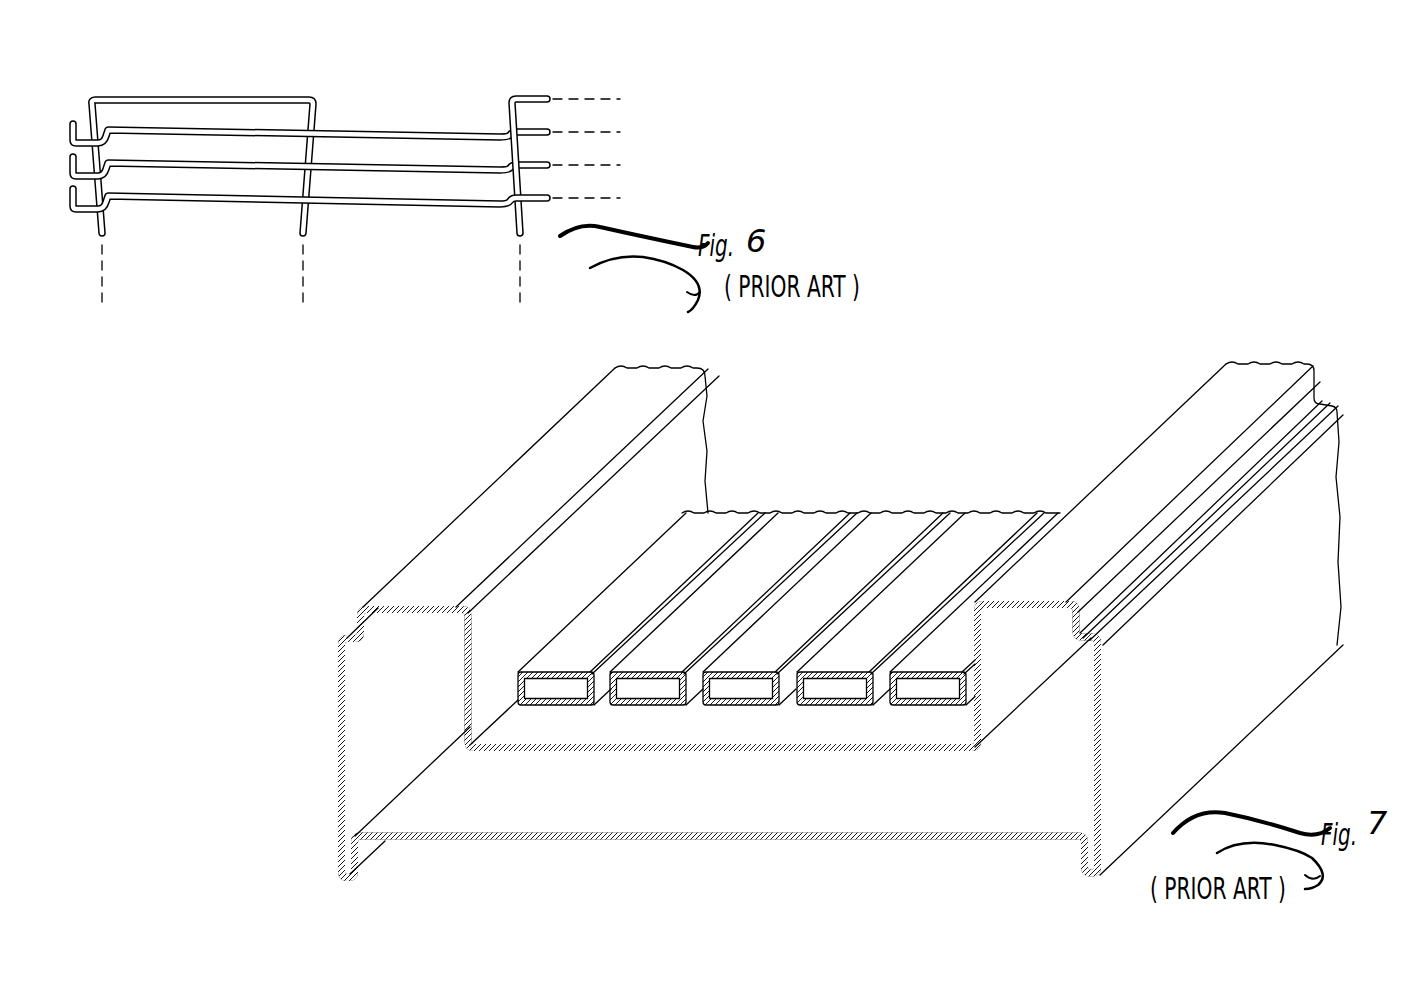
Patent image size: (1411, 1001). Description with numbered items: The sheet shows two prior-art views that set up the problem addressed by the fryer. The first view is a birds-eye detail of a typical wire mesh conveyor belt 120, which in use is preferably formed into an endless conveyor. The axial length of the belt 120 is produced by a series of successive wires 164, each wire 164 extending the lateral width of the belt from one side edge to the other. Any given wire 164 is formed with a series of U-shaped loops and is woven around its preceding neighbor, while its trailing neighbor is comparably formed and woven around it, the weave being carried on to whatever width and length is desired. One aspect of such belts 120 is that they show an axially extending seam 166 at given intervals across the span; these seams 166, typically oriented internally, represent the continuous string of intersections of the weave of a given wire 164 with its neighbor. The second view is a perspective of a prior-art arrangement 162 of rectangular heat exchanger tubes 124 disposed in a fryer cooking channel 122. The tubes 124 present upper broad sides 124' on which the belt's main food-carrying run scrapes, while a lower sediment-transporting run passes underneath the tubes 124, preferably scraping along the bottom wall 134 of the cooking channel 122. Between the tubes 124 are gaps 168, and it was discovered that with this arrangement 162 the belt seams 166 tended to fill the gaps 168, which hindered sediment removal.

In FIG. 6, the wire mesh conveyor belt 120 is at (195, 79).
In FIG. 6, the wire 164 is at (418, 207).
In FIG. 6, the seam 166 is at (318, 112).
In FIG. 7, the arrangement 162 is at (953, 408).
In FIG. 7, the fryer cooking channel 122 is at (703, 458).
In FIG. 7, the rectangular heat exchanger tube 124 is at (733, 577).
In FIG. 7, the upper broad side 124' is at (843, 571).
In FIG. 7, the gap 168 is at (860, 525).
In FIG. 7, the bottom wall 134 is at (645, 727).